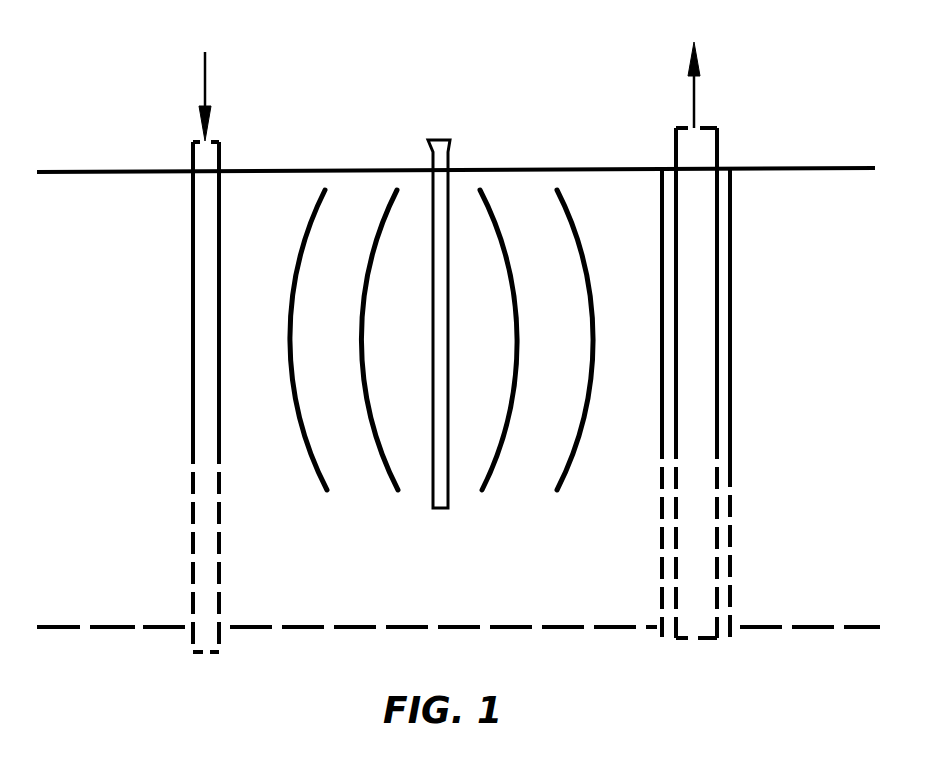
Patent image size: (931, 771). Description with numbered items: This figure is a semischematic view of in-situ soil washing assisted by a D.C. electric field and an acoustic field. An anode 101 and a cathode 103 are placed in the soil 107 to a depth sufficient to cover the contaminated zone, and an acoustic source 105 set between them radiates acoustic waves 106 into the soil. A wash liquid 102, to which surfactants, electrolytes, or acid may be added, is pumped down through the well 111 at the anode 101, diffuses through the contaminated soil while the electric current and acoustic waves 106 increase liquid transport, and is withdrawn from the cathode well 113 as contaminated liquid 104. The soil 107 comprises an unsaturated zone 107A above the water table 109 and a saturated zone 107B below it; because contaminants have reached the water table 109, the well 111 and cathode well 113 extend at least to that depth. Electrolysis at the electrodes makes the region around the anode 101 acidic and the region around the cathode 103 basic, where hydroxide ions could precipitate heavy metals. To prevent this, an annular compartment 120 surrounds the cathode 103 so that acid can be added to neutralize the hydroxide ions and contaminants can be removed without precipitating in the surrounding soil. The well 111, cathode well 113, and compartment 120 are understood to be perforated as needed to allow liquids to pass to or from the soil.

The anode 101 is at (221, 163).
The liquid 102 is at (206, 79).
The cathode 103 is at (719, 143).
The contaminated liquid 104 is at (696, 67).
The acoustic source 105 is at (449, 152).
The acoustic waves 106 is at (577, 239).
The soil 107 is at (778, 168).
The unsaturated zone 107A is at (128, 387).
The saturated zone 107B is at (472, 671).
The water table 109 is at (153, 626).
The well 111 is at (191, 289).
The cathode well 113 is at (719, 403).
The annular compartment 120 is at (731, 296).